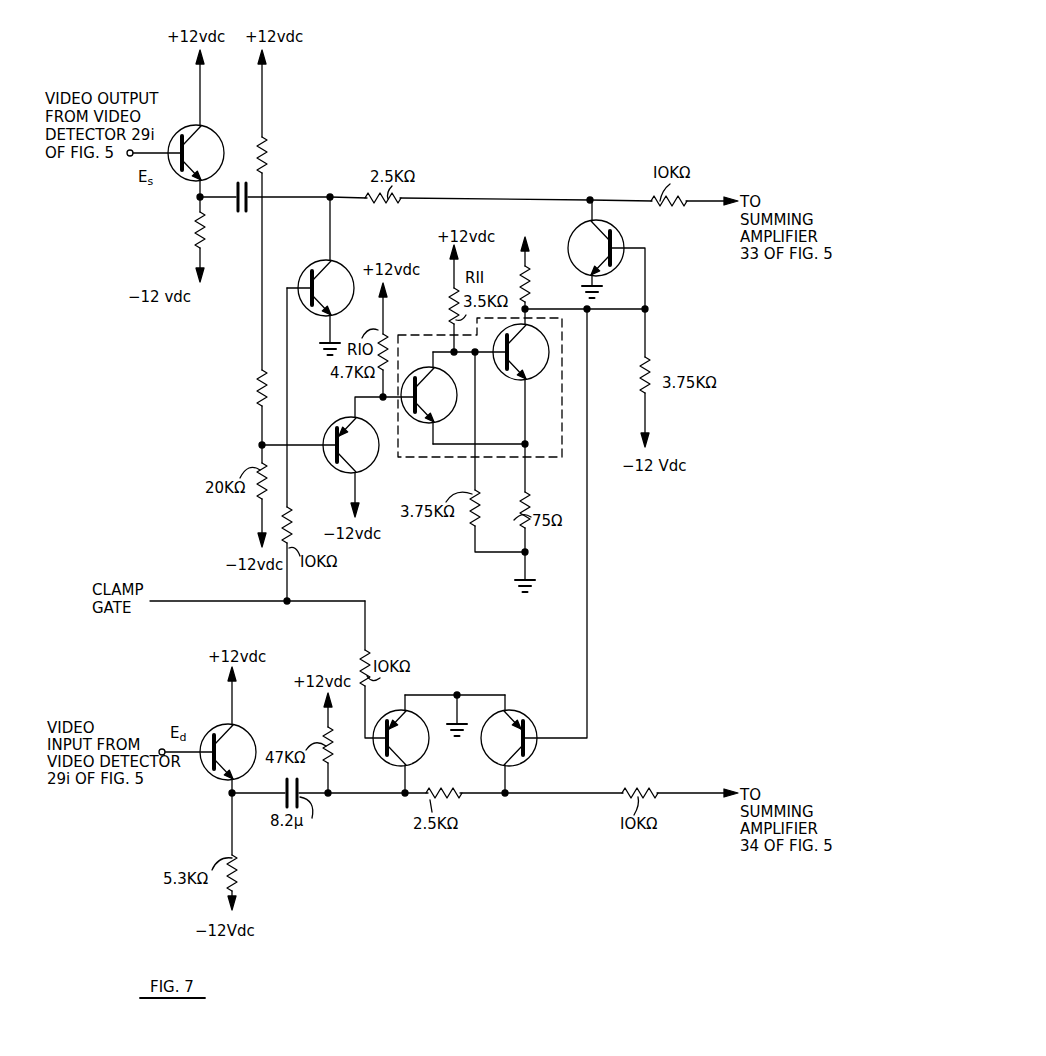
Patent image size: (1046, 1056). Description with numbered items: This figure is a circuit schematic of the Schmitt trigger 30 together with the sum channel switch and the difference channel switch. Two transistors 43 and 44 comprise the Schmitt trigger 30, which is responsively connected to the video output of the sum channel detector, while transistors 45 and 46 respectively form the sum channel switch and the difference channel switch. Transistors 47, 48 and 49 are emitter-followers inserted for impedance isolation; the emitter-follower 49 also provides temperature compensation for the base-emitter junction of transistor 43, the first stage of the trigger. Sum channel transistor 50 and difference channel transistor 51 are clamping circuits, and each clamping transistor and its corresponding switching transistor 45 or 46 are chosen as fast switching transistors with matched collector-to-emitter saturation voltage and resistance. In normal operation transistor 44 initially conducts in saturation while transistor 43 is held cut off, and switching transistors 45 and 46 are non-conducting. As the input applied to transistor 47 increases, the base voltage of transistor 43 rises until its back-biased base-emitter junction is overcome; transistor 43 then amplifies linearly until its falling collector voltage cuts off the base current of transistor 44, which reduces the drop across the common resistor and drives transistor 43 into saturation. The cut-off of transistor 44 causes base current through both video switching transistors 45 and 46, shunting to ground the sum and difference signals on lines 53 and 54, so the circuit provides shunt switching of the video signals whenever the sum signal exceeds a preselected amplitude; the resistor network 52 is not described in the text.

The Schmitt trigger 30 is at (547, 457).
The transistor 43 is at (437, 400).
The transistor 44 is at (528, 368).
The sum channel switching transistor 45 is at (622, 240).
The difference channel switching transistor 46 is at (520, 718).
The emitter-follower transistor 47 is at (206, 130).
The emitter-follower transistor 48 is at (240, 734).
The emitter-follower transistor 49 is at (370, 455).
The sum channel clamping transistor 50 is at (340, 270).
The difference channel clamping transistor 51 is at (408, 760).
The resistor network 52 is at (502, 472).
The sum signal line 53 is at (520, 199).
The difference signal line 54 is at (484, 797).